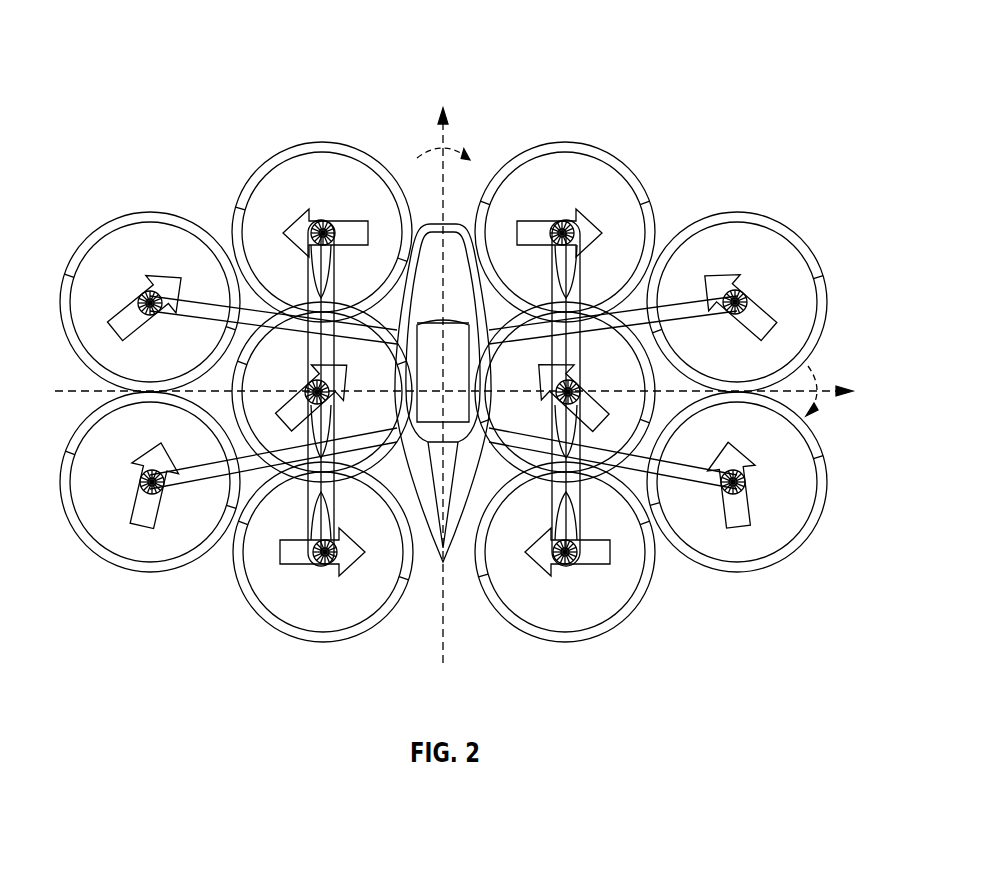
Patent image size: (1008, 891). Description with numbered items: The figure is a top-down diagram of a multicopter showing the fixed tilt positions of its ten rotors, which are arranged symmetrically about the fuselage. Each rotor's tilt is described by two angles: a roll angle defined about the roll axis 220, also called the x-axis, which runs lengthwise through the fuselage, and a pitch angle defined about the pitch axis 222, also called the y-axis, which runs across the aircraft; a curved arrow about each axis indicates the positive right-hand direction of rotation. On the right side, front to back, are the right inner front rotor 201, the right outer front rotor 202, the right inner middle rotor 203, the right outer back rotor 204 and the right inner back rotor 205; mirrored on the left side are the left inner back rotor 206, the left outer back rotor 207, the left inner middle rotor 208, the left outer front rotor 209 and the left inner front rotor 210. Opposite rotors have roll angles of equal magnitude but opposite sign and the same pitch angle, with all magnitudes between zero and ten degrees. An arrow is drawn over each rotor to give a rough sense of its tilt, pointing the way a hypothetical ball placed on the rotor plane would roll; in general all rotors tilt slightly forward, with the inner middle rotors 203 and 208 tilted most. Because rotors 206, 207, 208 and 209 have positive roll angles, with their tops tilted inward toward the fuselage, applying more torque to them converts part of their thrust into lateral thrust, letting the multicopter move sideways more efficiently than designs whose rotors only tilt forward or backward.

The right inner front rotor 201 is at (563, 144).
The right outer front rotor 202 is at (738, 212).
The right inner middle rotor 203 is at (542, 303).
The right outer back rotor 204 is at (733, 572).
The right inner back rotor 205 is at (557, 643).
The left inner back rotor 206 is at (325, 642).
The left outer back rotor 207 is at (152, 573).
The left inner middle rotor 208 is at (347, 301).
The left outer front rotor 209 is at (148, 212).
The left inner front rotor 210 is at (323, 142).
The roll axis 220 is at (443, 147).
The pitch axis 222 is at (828, 395).